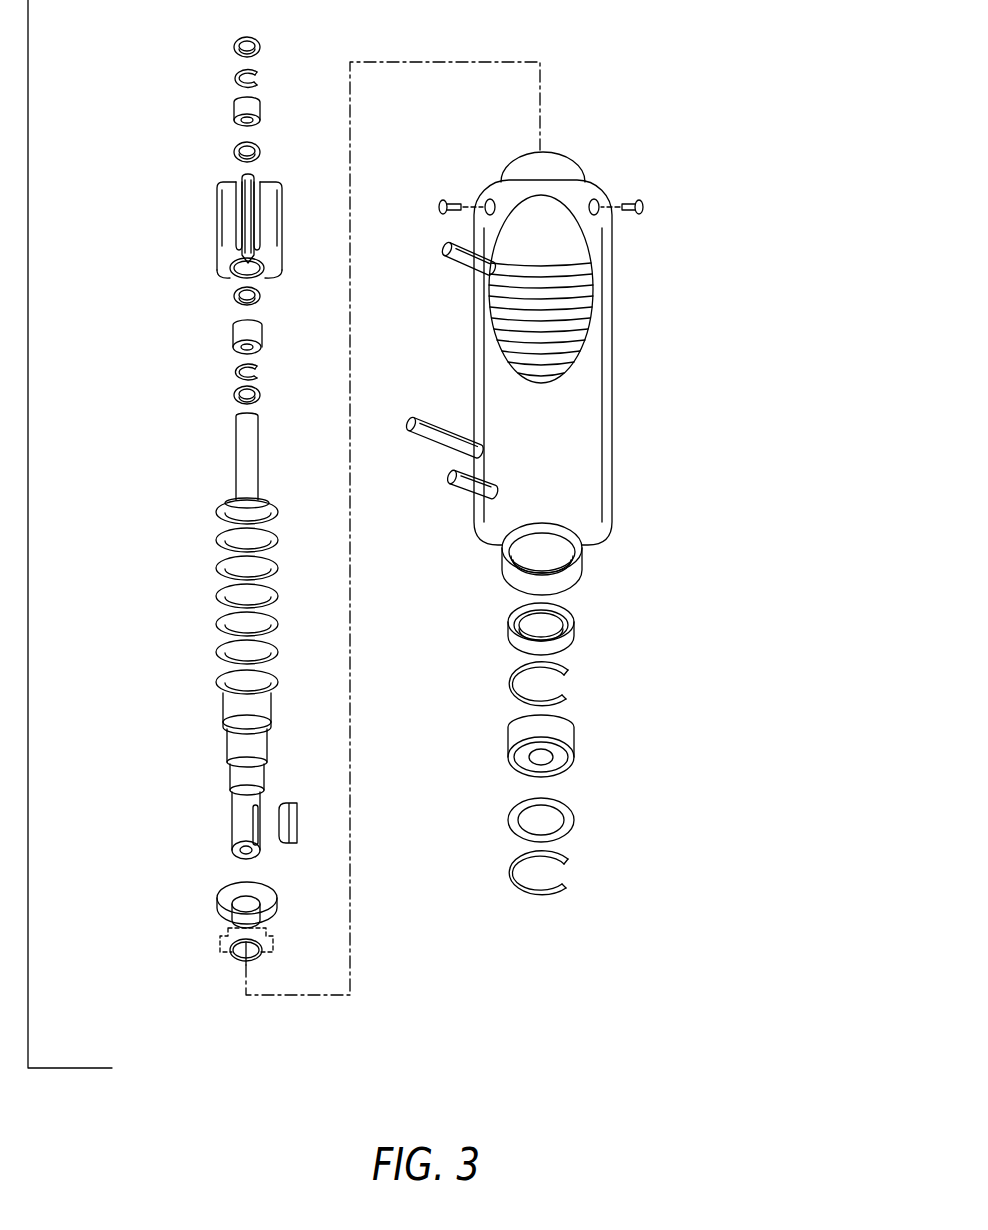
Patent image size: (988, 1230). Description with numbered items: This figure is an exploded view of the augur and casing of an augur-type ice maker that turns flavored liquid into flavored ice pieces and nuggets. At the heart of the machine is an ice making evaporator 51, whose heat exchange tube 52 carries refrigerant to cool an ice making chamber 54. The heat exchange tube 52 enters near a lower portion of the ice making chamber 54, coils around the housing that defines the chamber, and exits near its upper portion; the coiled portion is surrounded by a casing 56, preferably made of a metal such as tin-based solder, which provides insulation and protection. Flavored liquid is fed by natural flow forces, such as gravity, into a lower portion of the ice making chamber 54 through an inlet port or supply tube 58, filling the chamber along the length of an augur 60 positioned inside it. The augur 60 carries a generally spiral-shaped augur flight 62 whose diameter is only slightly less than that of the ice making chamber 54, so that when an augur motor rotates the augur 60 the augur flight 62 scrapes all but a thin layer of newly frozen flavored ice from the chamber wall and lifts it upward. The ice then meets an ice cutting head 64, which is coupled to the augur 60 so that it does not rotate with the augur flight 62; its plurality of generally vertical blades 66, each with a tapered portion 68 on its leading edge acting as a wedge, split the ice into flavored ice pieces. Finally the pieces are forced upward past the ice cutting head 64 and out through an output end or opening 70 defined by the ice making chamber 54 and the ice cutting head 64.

The ice making evaporator 51 is at (552, 245).
The heat exchange tube 52 is at (445, 265).
The ice making chamber 54 is at (552, 566).
The casing 56 is at (612, 415).
The inlet port or supply tube 58 is at (458, 495).
The augur 60 is at (185, 636).
The augur flight 62 is at (225, 600).
The ice cutting head 64 is at (240, 176).
The blades 66 is at (224, 221).
The tapered portion 68 is at (230, 283).
The output end or opening 70 is at (567, 150).